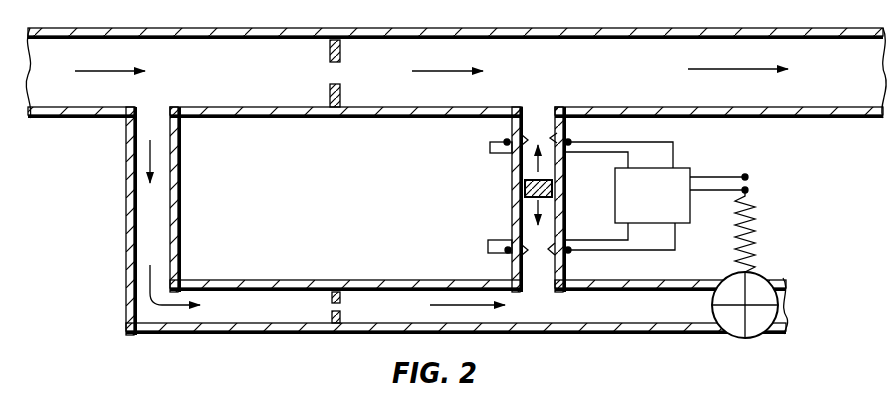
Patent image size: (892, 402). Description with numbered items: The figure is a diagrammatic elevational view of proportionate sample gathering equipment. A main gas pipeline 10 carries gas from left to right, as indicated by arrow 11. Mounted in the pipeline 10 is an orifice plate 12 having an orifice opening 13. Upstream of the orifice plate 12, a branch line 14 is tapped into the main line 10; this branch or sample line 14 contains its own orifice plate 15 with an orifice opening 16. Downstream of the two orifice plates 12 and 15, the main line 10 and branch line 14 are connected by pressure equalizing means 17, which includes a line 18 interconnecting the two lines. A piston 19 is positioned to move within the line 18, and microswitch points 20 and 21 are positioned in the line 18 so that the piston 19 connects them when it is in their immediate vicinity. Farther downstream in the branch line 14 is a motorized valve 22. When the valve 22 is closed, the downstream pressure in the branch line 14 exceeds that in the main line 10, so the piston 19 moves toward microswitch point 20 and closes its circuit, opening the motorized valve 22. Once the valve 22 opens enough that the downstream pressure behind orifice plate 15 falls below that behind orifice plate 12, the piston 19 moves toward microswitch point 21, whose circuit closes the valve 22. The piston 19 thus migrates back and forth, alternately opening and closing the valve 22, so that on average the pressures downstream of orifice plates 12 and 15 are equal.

The main gas pipeline 10 is at (233, 30).
The arrow 11 is at (97, 68).
The orifice plate 12 is at (340, 55).
The orifice opening 13 is at (330, 92).
The branch line 14 is at (126, 176).
The orifice plate 15 is at (340, 295).
The orifice opening 16 is at (340, 320).
The pressure equalizing means 17 is at (503, 180).
The line 18 is at (508, 142).
The piston 19 is at (565, 190).
The microswitch point 20 is at (550, 142).
The microswitch point 21 is at (552, 252).
The motorized valve 22 is at (752, 265).